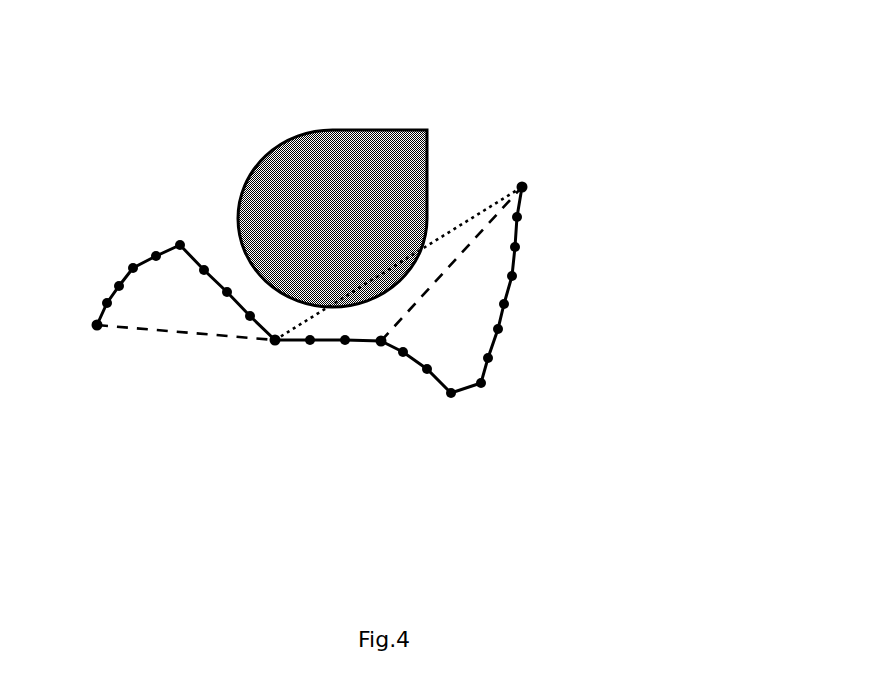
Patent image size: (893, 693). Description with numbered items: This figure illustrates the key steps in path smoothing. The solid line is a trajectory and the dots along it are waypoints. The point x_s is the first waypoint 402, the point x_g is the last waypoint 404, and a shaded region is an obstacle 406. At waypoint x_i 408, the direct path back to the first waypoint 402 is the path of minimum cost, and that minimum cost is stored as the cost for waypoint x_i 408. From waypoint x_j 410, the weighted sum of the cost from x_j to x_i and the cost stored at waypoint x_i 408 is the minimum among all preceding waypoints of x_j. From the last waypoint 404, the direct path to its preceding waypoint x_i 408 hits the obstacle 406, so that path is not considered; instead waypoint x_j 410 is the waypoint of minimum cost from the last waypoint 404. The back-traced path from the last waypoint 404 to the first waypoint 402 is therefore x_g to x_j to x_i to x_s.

The first waypoint 402 is at (100, 340).
The last waypoint 404 is at (518, 176).
The obstacle 406 is at (240, 167).
The waypoint x_i 408 is at (283, 352).
The waypoint x_j 410 is at (385, 352).